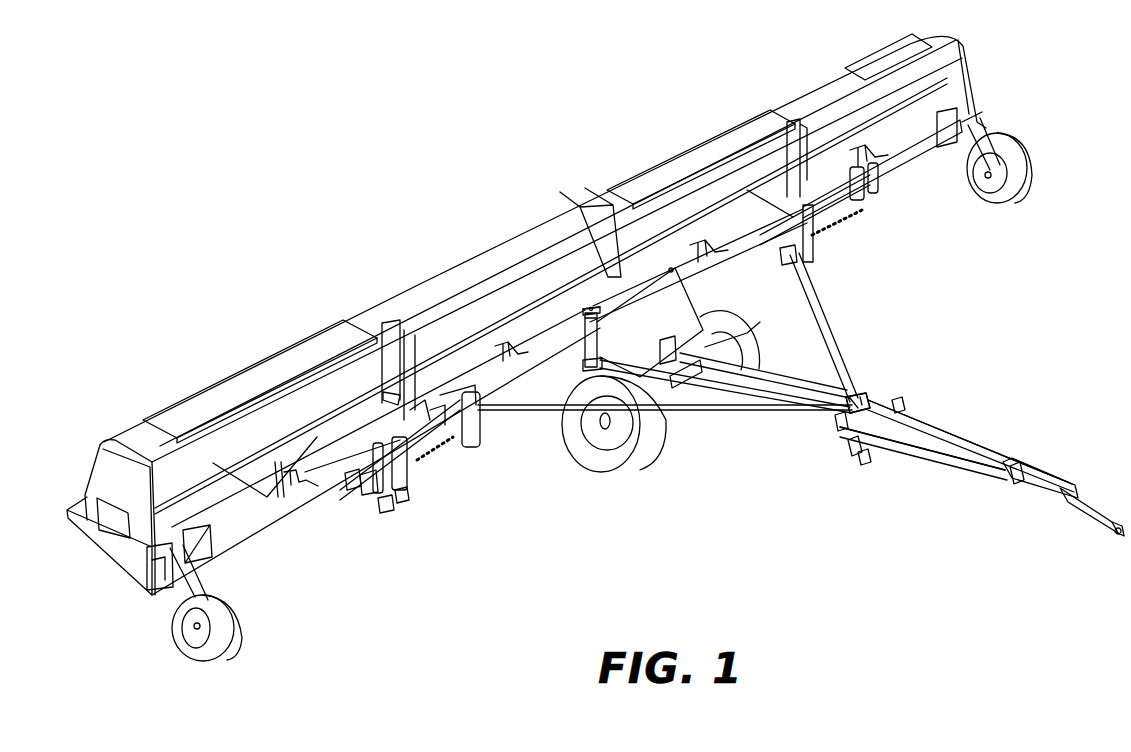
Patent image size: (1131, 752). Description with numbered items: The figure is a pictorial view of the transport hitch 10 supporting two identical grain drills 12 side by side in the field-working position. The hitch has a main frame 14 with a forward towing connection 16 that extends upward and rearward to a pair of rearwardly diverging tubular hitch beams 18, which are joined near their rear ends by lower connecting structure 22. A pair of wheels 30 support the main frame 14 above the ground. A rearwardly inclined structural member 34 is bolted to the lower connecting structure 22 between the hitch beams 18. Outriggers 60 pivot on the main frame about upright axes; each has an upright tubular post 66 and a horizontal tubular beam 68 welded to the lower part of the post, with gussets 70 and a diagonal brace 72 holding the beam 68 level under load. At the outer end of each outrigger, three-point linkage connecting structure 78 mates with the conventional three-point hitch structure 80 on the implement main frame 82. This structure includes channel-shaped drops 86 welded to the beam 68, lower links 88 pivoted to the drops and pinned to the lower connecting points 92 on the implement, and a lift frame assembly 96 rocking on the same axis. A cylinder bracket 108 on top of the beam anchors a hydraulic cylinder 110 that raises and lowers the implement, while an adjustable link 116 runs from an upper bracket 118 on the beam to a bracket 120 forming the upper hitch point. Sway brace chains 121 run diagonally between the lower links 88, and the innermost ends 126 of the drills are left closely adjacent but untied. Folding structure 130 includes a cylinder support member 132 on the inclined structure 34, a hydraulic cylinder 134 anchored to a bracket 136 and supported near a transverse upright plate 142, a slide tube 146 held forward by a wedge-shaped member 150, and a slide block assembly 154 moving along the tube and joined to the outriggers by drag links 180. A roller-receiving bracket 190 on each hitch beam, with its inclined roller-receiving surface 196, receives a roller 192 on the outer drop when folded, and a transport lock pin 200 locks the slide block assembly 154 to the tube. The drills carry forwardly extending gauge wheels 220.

The transport hitch 10 is at (1038, 343).
The grain drill 12 is at (748, 94).
The main frame 14 is at (902, 483).
The towing connection 16 is at (1110, 535).
The hitch beams 18 is at (962, 446).
The lower connecting structure 22 is at (688, 383).
The wheels 30 is at (755, 347).
The inclined structural member 34 is at (652, 317).
The outriggers 60 is at (730, 289).
The upright tubular post 66 is at (604, 320).
The horizontal tubular beam 68 is at (741, 266).
The gussets 70 is at (581, 314).
The diagonal brace 72 is at (665, 396).
The three-point linkage connecting structure 78 is at (845, 244).
The three-point hitch structure 80 is at (829, 136).
The implement main frame 82 is at (897, 174).
The drops 86 is at (478, 448).
The lower links 88 is at (370, 490).
The lower connecting points 92 is at (350, 485).
The lift frame assembly 96 is at (382, 511).
The cylinder bracket 108 is at (471, 405).
The hydraulic cylinders 110 is at (380, 456).
The adjustable link 116 is at (417, 426).
The upper bracket 118 is at (437, 409).
The bracket 120 is at (383, 401).
The sway brace chains 121 is at (425, 461).
The ends 126 is at (568, 207).
The folding structure 130 is at (858, 378).
The cylinder support member 132 is at (667, 345).
The hydraulic cylinder 134 is at (772, 374).
The bracket 136 is at (748, 325).
The transverse upright plate 142 is at (838, 422).
The slide tube 146 is at (988, 452).
The wedge-shaped member 150 is at (1017, 474).
The slide block assembly 154 is at (862, 395).
The drag links 180 is at (823, 303).
The roller-receiving bracket 190 is at (900, 406).
The roller 192 is at (399, 494).
The inclined roller-receiving surface 196 is at (852, 446).
The transport lock pin 200 is at (1015, 476).
The gauge wheels 220 is at (1030, 186).